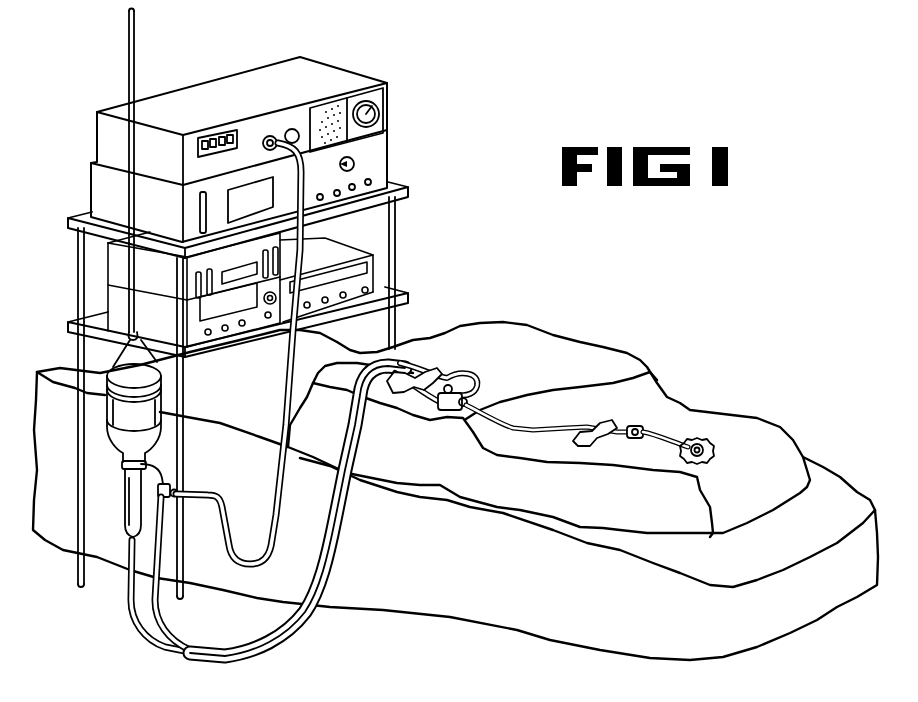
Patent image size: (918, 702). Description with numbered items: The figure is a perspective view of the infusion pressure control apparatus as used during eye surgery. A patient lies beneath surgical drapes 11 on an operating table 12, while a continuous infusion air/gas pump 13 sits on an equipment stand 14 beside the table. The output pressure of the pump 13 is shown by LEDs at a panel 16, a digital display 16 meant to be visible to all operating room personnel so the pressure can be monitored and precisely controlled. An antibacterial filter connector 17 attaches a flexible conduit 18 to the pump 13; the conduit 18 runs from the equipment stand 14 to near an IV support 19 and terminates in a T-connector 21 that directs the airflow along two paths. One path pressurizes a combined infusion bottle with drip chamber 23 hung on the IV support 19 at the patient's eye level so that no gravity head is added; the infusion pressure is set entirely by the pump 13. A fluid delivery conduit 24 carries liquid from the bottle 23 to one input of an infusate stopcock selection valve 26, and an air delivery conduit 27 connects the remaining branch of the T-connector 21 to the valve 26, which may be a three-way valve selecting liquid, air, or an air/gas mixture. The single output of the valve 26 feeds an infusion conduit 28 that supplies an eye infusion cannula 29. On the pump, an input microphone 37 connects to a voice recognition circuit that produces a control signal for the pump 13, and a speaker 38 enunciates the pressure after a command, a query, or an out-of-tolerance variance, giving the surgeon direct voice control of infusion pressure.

The surgical drapes 11 is at (743, 427).
The operating table 12 is at (830, 497).
The continuous infusion air/gas pump 13 is at (108, 137).
The equipment stand 14 is at (398, 244).
The panel 16 is at (215, 136).
The antibacterial filter connector 17 is at (266, 136).
The conduit 18 is at (286, 376).
The IV support 19 is at (128, 33).
The T-connector 21 is at (172, 490).
The combined infusion bottle with drip chamber 23 is at (129, 505).
The fluid delivery conduit 24 is at (128, 615).
The infusate stopcock selection valve 26 is at (447, 413).
The air delivery conduit 27 is at (158, 616).
The infusion conduit 28 is at (530, 428).
The eye infusion cannula 29 is at (668, 430).
The input microphone 37 is at (335, 107).
The speaker 38 is at (381, 113).